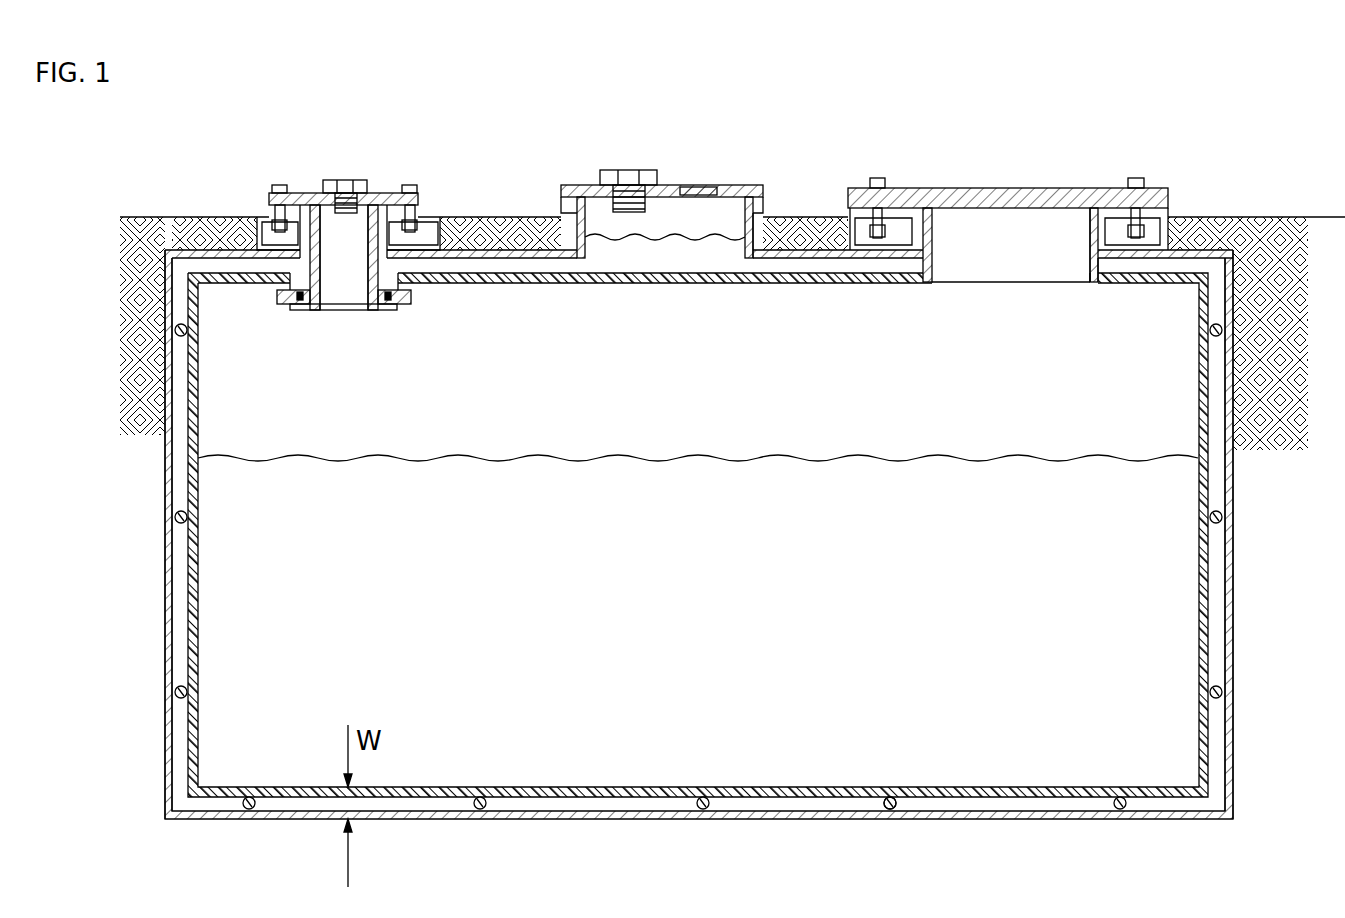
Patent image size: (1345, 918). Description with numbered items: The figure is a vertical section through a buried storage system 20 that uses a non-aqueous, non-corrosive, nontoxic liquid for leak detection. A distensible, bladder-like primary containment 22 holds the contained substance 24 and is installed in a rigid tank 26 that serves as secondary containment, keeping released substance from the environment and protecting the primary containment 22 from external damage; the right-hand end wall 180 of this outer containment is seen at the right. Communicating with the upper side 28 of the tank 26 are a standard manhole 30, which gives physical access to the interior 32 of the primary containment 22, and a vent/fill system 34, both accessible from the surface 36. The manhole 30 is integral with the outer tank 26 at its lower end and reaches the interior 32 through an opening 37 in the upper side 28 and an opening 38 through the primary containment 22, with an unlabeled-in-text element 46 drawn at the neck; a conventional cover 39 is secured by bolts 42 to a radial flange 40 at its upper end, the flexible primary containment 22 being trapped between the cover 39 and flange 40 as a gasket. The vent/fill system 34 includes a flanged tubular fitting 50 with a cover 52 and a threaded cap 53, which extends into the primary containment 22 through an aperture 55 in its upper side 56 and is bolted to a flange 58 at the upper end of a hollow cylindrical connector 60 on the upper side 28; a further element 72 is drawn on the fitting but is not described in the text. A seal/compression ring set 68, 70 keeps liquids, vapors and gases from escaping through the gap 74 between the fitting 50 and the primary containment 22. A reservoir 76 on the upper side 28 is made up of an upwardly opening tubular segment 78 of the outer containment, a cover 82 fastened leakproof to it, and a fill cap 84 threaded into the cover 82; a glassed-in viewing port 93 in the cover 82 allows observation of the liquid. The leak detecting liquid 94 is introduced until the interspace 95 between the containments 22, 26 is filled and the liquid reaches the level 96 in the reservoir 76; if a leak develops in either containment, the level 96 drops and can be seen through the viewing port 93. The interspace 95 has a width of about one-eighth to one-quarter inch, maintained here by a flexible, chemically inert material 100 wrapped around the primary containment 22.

The storage system 20 is at (495, 120).
The primary containment 22 is at (174, 535).
The contained substance 24 is at (537, 542).
The rigid tank 26 is at (164, 586).
The upper side 28 is at (1203, 250).
The manhole 30 is at (1102, 253).
The interior 32 is at (220, 403).
The vent/fill system 34 is at (325, 243).
The surface 36 is at (1252, 216).
The opening 37 is at (1092, 240).
The opening 38 is at (1090, 278).
The cover 39 is at (908, 187).
The radial flange 40 is at (1041, 222).
The bolts 42 is at (880, 177).
The neck seal 46 is at (1100, 275).
The tubular fitting 50 is at (400, 280).
The cover 52 is at (383, 192).
The threaded cap 53 is at (341, 182).
The aperture 55 is at (385, 300).
The upper side 56 is at (200, 262).
The flange 58 is at (270, 206).
The hollow cylindrical connector 60 is at (390, 239).
The seal ring 68 is at (300, 305).
The compression ring 70 is at (288, 297).
The pipe sleeve 72 is at (300, 268).
The gap 74 is at (405, 295).
The reservoir 76 is at (679, 220).
The tubular segment 78 is at (760, 240).
The cover 82 is at (580, 186).
The fill cap 84 is at (620, 170).
The viewing port 93 is at (700, 186).
The leak detecting liquid 94 is at (621, 255).
The interspace 95 is at (645, 803).
The level 96 is at (650, 232).
The flexible material 100 is at (890, 805).
The right-hand end wall 180 is at (1233, 493).